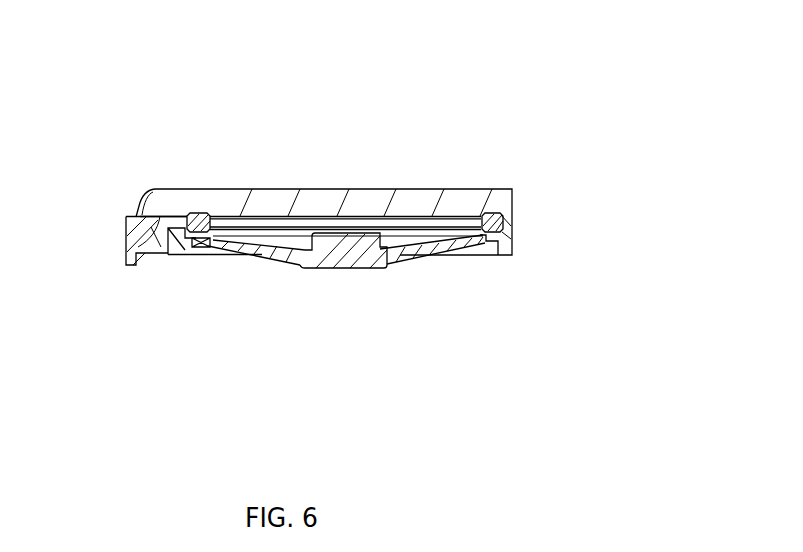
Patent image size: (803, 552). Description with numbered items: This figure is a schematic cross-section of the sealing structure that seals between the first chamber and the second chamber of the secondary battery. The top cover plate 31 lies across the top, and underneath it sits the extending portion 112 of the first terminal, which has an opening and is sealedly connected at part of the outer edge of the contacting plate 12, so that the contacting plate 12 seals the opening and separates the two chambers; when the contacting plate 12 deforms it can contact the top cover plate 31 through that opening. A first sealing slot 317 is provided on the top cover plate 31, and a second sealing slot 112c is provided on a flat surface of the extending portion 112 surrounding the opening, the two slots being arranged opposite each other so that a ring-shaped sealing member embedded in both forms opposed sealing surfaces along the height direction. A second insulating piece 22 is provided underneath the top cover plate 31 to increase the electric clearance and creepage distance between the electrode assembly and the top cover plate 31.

The second insulating piece 22 is at (190, 212).
The first sealing slot 317 is at (200, 212).
The top cover plate 31 is at (305, 205).
The extending portion 112 is at (178, 256).
The second sealing slot 112c is at (198, 242).
The contacting plate 12 is at (332, 268).